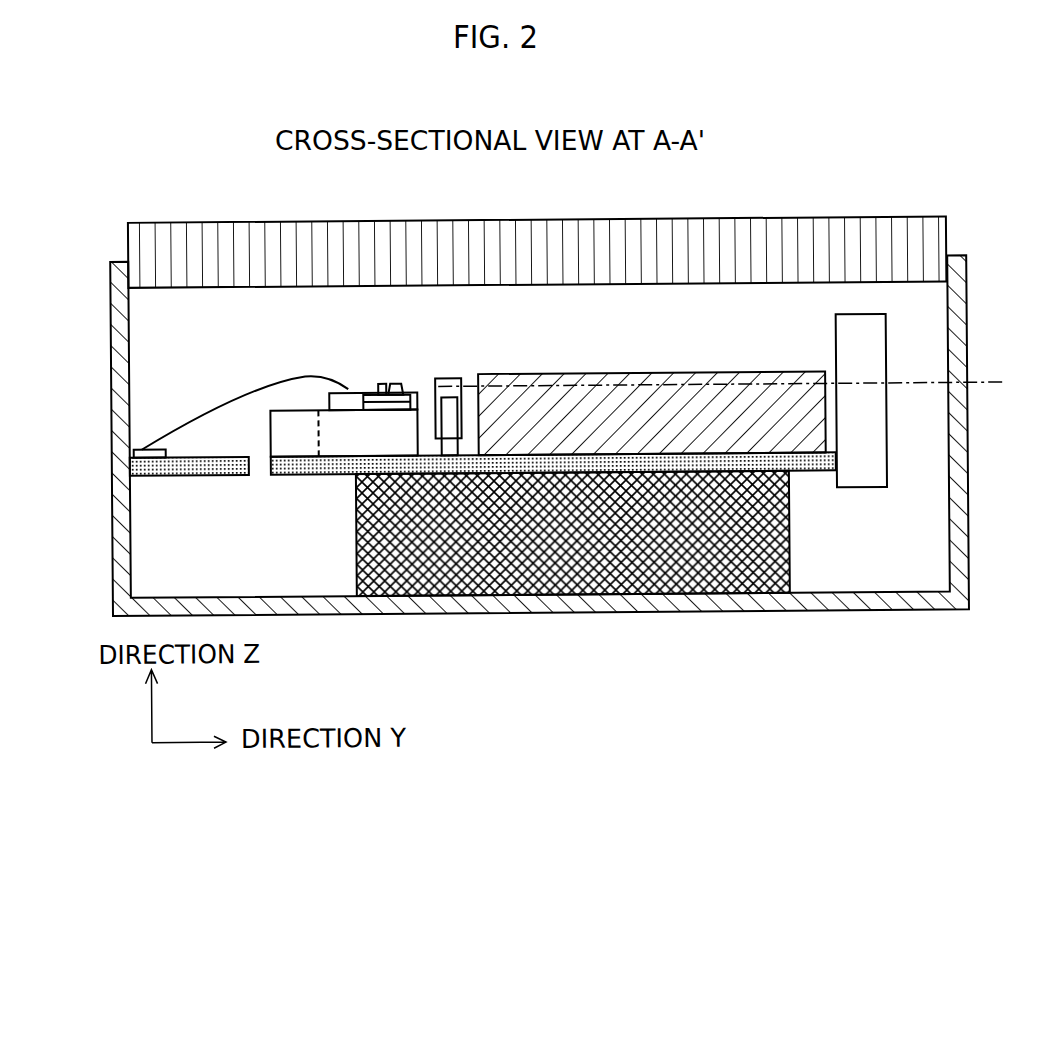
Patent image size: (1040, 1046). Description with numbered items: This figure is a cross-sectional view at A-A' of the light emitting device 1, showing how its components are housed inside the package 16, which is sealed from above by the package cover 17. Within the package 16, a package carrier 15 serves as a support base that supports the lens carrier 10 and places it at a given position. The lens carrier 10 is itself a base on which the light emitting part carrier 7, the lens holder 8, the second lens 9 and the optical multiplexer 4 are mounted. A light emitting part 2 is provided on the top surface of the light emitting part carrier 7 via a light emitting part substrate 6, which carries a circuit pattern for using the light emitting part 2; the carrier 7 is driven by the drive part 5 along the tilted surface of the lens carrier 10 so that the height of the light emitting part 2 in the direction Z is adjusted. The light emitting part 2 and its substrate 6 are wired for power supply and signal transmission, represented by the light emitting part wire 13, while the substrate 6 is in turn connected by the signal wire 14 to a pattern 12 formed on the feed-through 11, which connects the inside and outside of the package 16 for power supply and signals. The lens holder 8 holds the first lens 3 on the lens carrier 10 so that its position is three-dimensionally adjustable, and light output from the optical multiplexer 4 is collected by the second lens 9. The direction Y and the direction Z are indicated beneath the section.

The light emitting device 1 is at (524, 365).
The light emitting part 2 is at (376, 397).
The first lens 3 is at (448, 381).
The optical multiplexer 4 is at (707, 377).
The drive part 5 is at (345, 395).
The light emitting part substrate 6 is at (413, 404).
The light emitting part carrier 7 is at (398, 386).
The lens holder 8 is at (445, 400).
The second lens 9 is at (888, 351).
The lens carrier 10 is at (321, 504).
The feed-through 11 is at (205, 478).
The pattern 12 is at (138, 449).
The light emitting part wire 13 is at (385, 386).
The signal wire 14 is at (240, 404).
The package carrier 15 is at (790, 566).
The package 16 is at (113, 311).
The package cover 17 is at (950, 250).